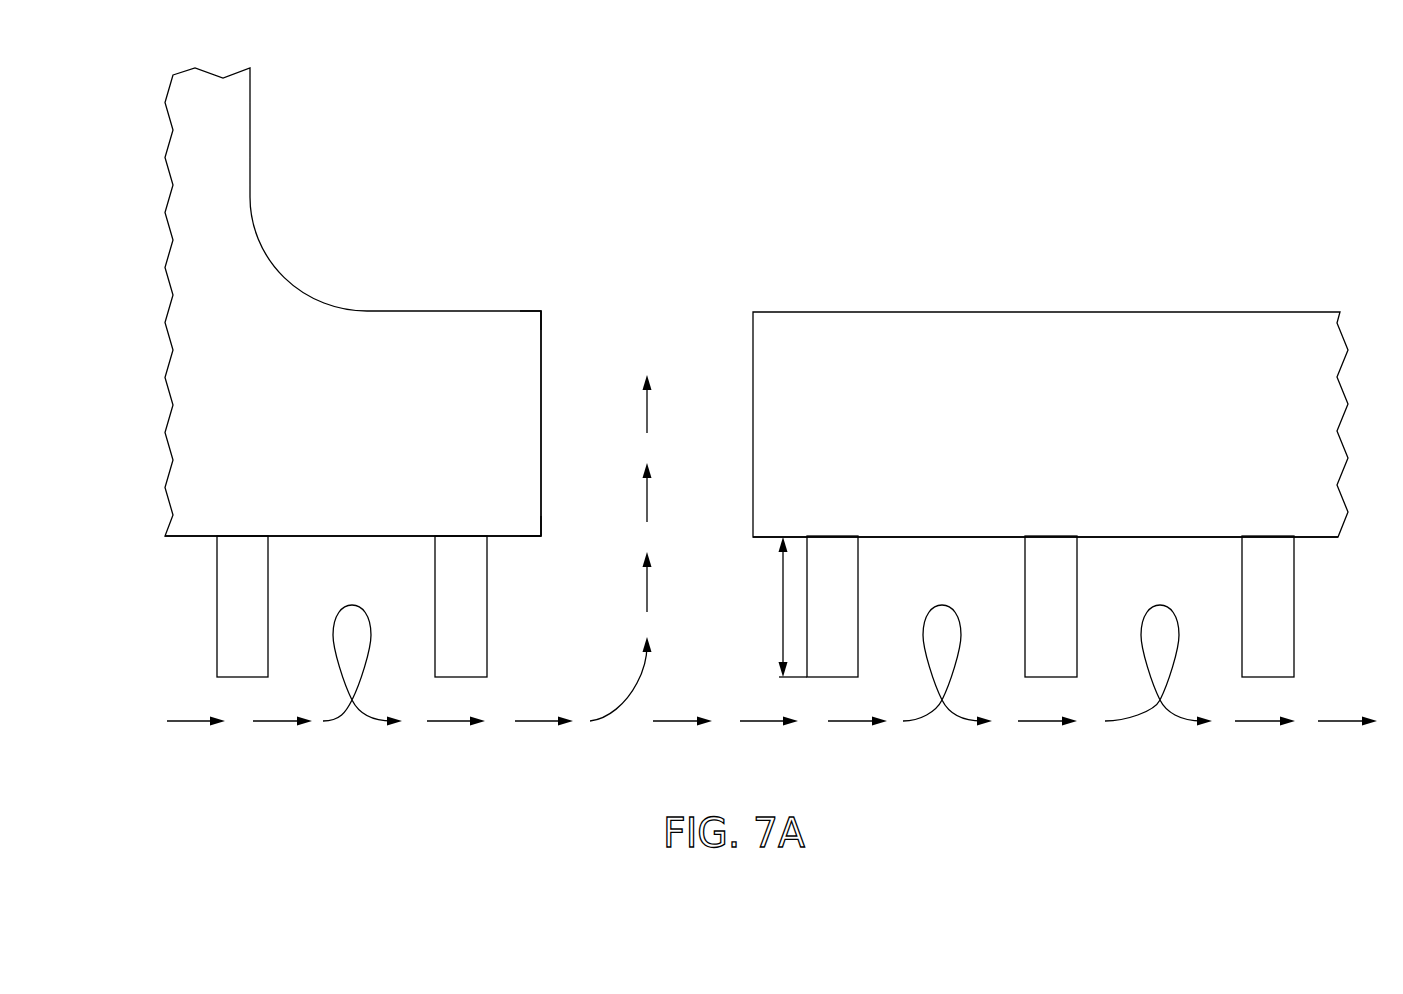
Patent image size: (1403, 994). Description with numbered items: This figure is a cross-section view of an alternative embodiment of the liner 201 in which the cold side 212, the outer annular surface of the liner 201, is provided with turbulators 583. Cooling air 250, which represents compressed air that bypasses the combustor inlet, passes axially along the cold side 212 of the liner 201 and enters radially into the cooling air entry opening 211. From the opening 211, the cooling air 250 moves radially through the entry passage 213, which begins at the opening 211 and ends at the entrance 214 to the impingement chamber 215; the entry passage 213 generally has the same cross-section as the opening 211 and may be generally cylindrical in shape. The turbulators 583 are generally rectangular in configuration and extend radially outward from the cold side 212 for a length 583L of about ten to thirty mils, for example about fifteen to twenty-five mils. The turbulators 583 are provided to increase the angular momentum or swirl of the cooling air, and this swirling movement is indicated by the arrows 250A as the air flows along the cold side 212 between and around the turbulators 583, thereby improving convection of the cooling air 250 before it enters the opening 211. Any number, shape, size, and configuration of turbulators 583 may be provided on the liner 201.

The liner 201 is at (331, 458).
The cooling air entry opening 211 is at (546, 528).
The cold side 212 is at (188, 538).
The entry passage 213 is at (572, 392).
The entrance 214 is at (548, 304).
The impingement chamber 215 is at (790, 108).
The cooling air 250 is at (652, 497).
The swirl movement of cooling air 250A is at (188, 723).
The turbulators 583 is at (217, 637).
The turbulator length 583L is at (783, 607).